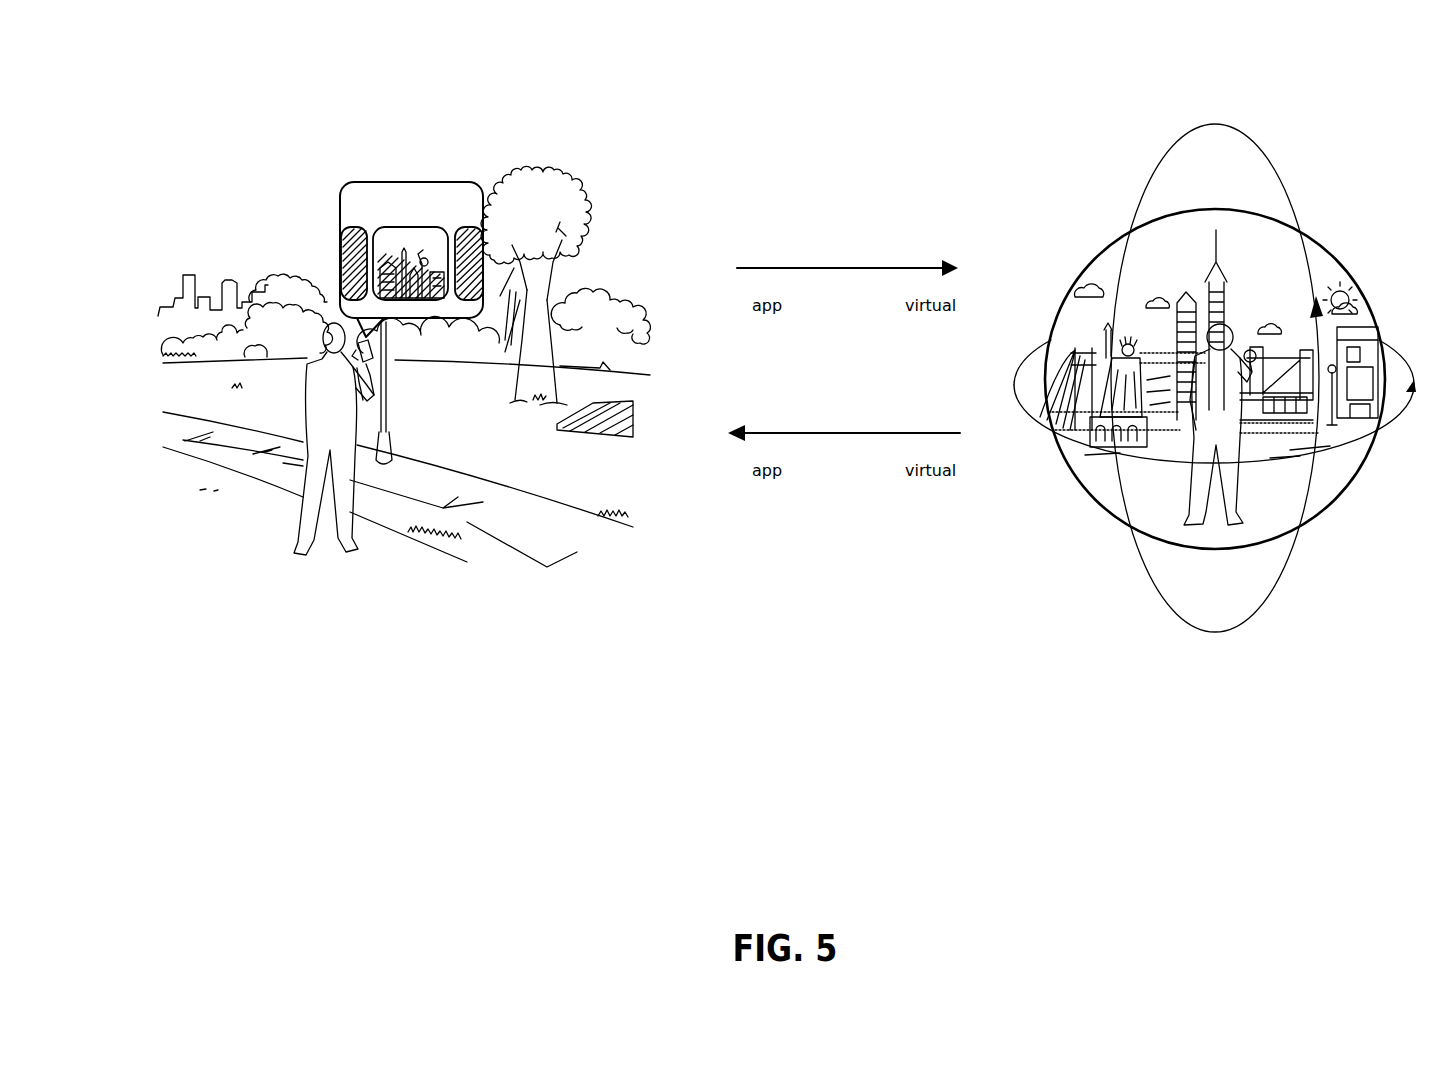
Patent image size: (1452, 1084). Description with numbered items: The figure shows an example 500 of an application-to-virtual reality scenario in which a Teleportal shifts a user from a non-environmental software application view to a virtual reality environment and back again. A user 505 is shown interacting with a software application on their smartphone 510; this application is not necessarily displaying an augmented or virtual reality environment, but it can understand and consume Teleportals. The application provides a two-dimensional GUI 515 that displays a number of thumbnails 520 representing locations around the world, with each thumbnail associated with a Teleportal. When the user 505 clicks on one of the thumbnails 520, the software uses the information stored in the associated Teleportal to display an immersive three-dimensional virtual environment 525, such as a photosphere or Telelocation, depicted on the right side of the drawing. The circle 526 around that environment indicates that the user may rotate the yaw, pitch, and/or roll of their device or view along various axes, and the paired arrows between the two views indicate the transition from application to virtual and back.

The example 500 is at (256, 87).
The user 505 is at (284, 525).
The smartphone 510 is at (386, 357).
The 2D GUI 515 is at (379, 168).
The thumbnails 520 is at (440, 232).
The immersive 3D virtual environment 525 is at (1107, 265).
The circle 526 is at (1121, 564).